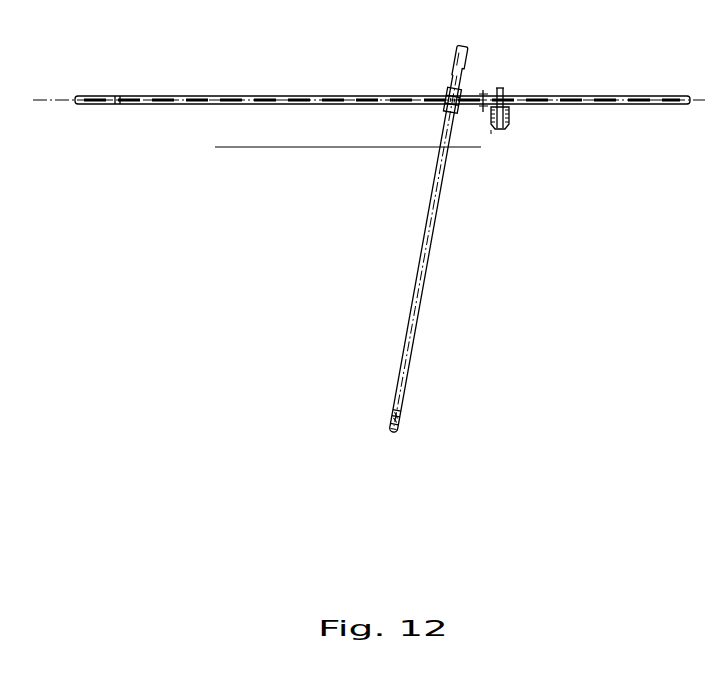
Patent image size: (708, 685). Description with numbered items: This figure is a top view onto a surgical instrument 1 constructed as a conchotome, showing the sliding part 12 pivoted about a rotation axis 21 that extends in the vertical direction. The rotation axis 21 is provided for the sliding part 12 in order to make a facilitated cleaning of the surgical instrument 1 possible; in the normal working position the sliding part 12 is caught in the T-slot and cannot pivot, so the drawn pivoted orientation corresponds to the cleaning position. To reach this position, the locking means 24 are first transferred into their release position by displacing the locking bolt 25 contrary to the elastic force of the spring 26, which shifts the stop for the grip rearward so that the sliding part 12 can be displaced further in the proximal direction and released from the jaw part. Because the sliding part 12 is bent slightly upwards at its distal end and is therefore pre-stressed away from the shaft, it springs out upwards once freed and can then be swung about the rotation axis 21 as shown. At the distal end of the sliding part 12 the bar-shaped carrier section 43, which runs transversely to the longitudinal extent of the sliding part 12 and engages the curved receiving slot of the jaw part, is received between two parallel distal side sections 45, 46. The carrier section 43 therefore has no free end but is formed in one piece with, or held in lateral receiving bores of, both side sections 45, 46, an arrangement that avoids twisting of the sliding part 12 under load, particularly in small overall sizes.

The surgical instrument 1 is at (235, 133).
The sliding part 12 is at (435, 250).
The rotation axis 21 is at (450, 94).
The locking means 24 is at (522, 125).
The locking bolt 25 is at (491, 132).
The spring 26 is at (505, 115).
The carrier section 43 is at (392, 437).
The distal side section 45 is at (391, 418).
The distal side section 46 is at (403, 418).